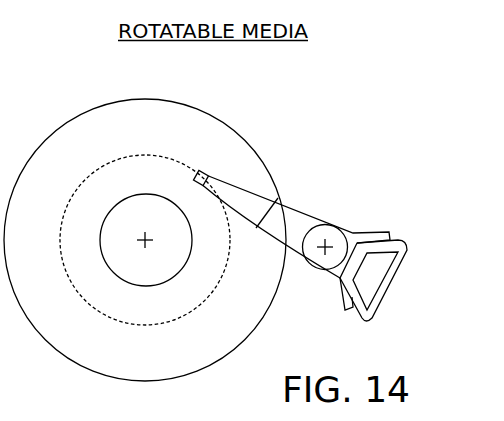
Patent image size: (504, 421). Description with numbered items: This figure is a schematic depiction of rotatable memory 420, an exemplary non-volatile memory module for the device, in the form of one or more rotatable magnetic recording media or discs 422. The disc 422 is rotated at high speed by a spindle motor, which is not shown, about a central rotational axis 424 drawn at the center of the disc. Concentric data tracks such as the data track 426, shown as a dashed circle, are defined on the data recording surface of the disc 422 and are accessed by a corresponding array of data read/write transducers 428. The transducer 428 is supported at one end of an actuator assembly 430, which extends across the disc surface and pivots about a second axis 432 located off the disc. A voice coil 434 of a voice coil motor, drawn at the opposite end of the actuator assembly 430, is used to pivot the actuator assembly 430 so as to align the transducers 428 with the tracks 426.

The rotatable memory 420 is at (357, 119).
The rotatable magnetic recording media (disc) 422 is at (153, 107).
The central rotational axis 424 is at (149, 238).
The data track 426 is at (88, 175).
The data read/write transducer 428 is at (202, 171).
The actuator assembly 430 is at (310, 213).
The second axis 432 is at (322, 252).
The voice coil 434 is at (407, 254).